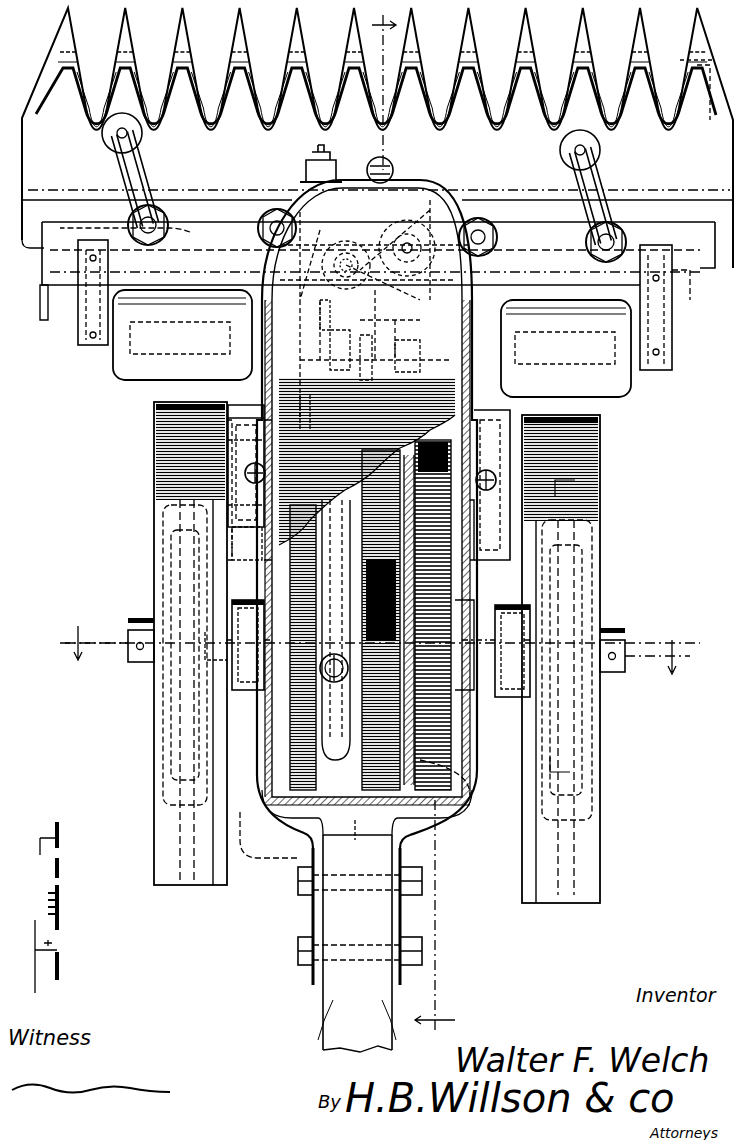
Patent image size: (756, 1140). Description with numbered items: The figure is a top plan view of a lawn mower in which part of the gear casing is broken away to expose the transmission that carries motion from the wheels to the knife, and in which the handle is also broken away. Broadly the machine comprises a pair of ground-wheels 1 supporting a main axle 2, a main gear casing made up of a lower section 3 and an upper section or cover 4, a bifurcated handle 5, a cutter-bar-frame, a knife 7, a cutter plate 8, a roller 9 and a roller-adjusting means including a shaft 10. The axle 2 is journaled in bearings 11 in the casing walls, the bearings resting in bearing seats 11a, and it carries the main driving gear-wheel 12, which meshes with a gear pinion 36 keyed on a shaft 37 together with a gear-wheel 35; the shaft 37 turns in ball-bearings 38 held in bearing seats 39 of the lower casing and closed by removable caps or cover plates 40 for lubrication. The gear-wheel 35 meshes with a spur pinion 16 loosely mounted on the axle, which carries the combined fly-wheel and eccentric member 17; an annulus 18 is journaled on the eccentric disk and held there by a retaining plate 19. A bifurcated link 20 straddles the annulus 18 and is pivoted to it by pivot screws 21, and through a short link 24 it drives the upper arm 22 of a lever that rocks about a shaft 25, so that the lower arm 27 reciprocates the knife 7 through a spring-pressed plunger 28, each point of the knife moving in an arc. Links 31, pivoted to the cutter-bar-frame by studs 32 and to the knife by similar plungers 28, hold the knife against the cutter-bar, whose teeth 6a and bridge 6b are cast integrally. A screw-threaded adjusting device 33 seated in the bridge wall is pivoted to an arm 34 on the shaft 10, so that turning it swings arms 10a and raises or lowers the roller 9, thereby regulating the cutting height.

The ground-wheels 1 is at (590, 876).
The main axle 2 is at (128, 640).
The lower section of main gear casing 3 is at (300, 998).
The upper section or cover of main gear casing 4 is at (452, 878).
The bifurcated handle 5 is at (590, 490).
The teeth 6a is at (185, 45).
The bridge 6b is at (470, 205).
The knife 7 is at (692, 180).
The cutter plate 8 is at (692, 128).
The roller 9 is at (620, 390).
The shaft 10 is at (48, 270).
The arms 10a is at (86, 310).
The bearings 11 is at (248, 692).
The bearing seats 11a is at (235, 650).
The main driving gear-wheel 12 is at (440, 795).
The spur pinion 16 is at (375, 688).
The combined fly-wheel and eccentric member 17 is at (386, 740).
The annulus 18 is at (338, 742).
The retaining plate 19 is at (420, 720).
The bifurcated link 20 is at (335, 505).
The pivot screws 21 is at (430, 722).
The upper arm 22 is at (400, 300).
The link 24 is at (328, 302).
The shaft 25 is at (420, 278).
The lower arm 27 is at (416, 186).
The spring-pressed plunger 28 is at (110, 140).
The links 31 is at (150, 172).
The pivots or studs 32 is at (165, 220).
The screw-threaded adjusting device 33 is at (304, 178).
The arm 34 is at (260, 400).
The gear-wheel 35 is at (474, 580).
The gear pinion 36 is at (474, 530).
The shaft 37 is at (256, 440).
The ball-bearings 38 is at (486, 410).
The bearing seats 39 is at (232, 404).
The caps or cover plates 40 is at (235, 505).